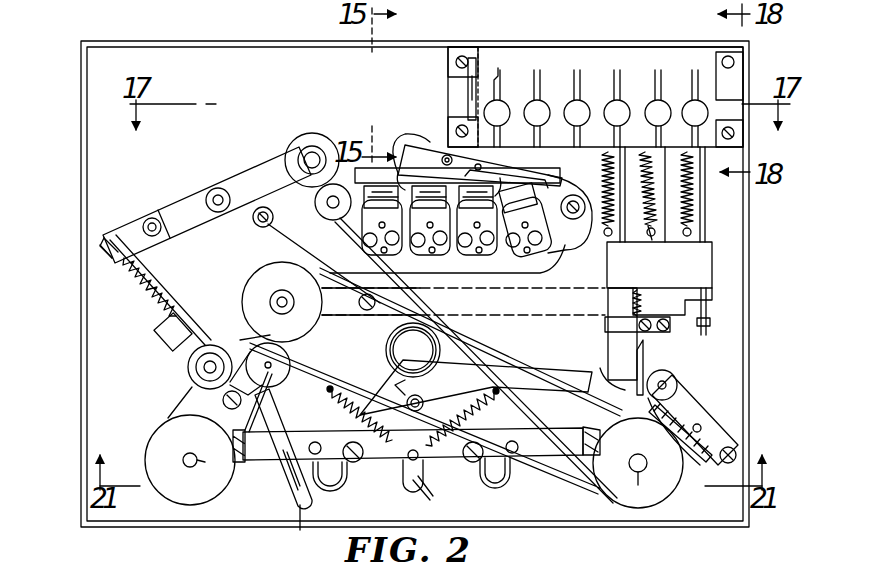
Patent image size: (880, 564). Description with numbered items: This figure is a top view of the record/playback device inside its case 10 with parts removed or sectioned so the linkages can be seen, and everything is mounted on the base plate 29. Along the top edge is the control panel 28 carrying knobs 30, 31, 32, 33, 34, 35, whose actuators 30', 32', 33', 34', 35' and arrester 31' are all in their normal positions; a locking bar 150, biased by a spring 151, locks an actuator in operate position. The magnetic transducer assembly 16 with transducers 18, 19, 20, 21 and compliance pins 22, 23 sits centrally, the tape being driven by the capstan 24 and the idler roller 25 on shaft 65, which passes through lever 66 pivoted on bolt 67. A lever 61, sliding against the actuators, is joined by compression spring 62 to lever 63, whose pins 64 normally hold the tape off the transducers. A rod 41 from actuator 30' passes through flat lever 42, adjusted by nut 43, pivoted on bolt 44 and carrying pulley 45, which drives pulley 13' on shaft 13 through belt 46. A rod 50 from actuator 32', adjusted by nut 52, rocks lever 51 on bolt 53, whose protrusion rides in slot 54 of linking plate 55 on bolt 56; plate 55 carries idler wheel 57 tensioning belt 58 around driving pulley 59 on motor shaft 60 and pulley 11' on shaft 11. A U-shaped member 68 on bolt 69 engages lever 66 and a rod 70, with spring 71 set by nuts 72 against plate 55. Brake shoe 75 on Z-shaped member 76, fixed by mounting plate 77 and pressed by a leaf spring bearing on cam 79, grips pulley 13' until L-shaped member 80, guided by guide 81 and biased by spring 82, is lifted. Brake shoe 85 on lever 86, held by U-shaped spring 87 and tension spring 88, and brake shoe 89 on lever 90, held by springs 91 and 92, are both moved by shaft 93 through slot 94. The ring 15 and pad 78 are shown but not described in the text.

The case 10 is at (82, 350).
The shaft 11 is at (184, 452).
The pulley 11' is at (133, 437).
The shaft 13 is at (649, 476).
The pulley 13' is at (690, 496).
The drive ring 15 is at (392, 354).
The magnetic transducer assembly 16 is at (468, 270).
The transducer 18 is at (538, 262).
The transducer 19 is at (488, 262).
The transducer 20 is at (398, 270).
The transducer 21 is at (370, 250).
The compliance pin 22 is at (570, 224).
The compliance pin 23 is at (255, 224).
The driving capstan 24 is at (326, 216).
The idler roller 25 is at (314, 134).
The control panel 28 is at (592, 47).
The base plate 29 is at (238, 58).
The knob 30 is at (684, 107).
The actuator 30' is at (715, 165).
The knob 31 is at (664, 95).
The arrester 31' is at (662, 183).
The knob 32 is at (623, 95).
The actuator 32' is at (631, 133).
The knob 33 is at (583, 95).
The actuator 33' is at (592, 133).
The knob 34 is at (542, 95).
The actuator 34' is at (549, 133).
The knob 35 is at (501, 95).
The actuator 35' is at (508, 133).
The rod 41 is at (706, 230).
The flat lever 42 is at (585, 312).
The nut 43 is at (705, 330).
The bolt 44 is at (362, 312).
The pulley 45 is at (256, 290).
The flexible drive belt 46 is at (566, 385).
The rod 50 is at (622, 245).
The lever 51 is at (545, 373).
The nut 52 is at (600, 372).
The bolt 53 is at (424, 400).
The slot 54 is at (298, 530).
The linking plate 55 is at (282, 470).
The bolt 56 is at (200, 398).
The idler wheel 57 is at (188, 368).
The belt 58 is at (258, 404).
The driving pulley 59 is at (282, 380).
The shaft 60 is at (256, 352).
The lever 61 is at (430, 148).
The compression spring 62 is at (404, 140).
The lever 63 is at (483, 148).
The pins 64 is at (398, 168).
The shaft 65 is at (305, 154).
The lever 66 is at (246, 178).
The bolt 67 is at (216, 188).
The U-shaped member 68 is at (118, 236).
The bolt 69 is at (152, 218).
The rod 70 is at (130, 262).
The spring 71 is at (165, 310).
The nuts 72 is at (145, 285).
The brake shoe 75 is at (682, 455).
The Z-shaped member 76 is at (644, 372).
The mounting plate 77 is at (702, 408).
The pad 78 is at (680, 426).
The cam-shaped member 79 is at (670, 376).
The L-shaped member 80 is at (700, 270).
The guide 81 is at (618, 318).
The spring 82 is at (640, 300).
The brake shoe 85 is at (638, 463).
The lever 86 is at (560, 470).
The U-shaped spring 87 is at (496, 480).
The tension spring 88 is at (478, 408).
The brake shoe 89 is at (201, 471).
The lever 90 is at (380, 462).
The U-shaped compression spring 91 is at (332, 478).
The tension spring 92 is at (345, 392).
The shaft 93 is at (424, 478).
The slot 94 is at (430, 496).
The locking bar 150 is at (733, 66).
The spring 151 is at (470, 108).